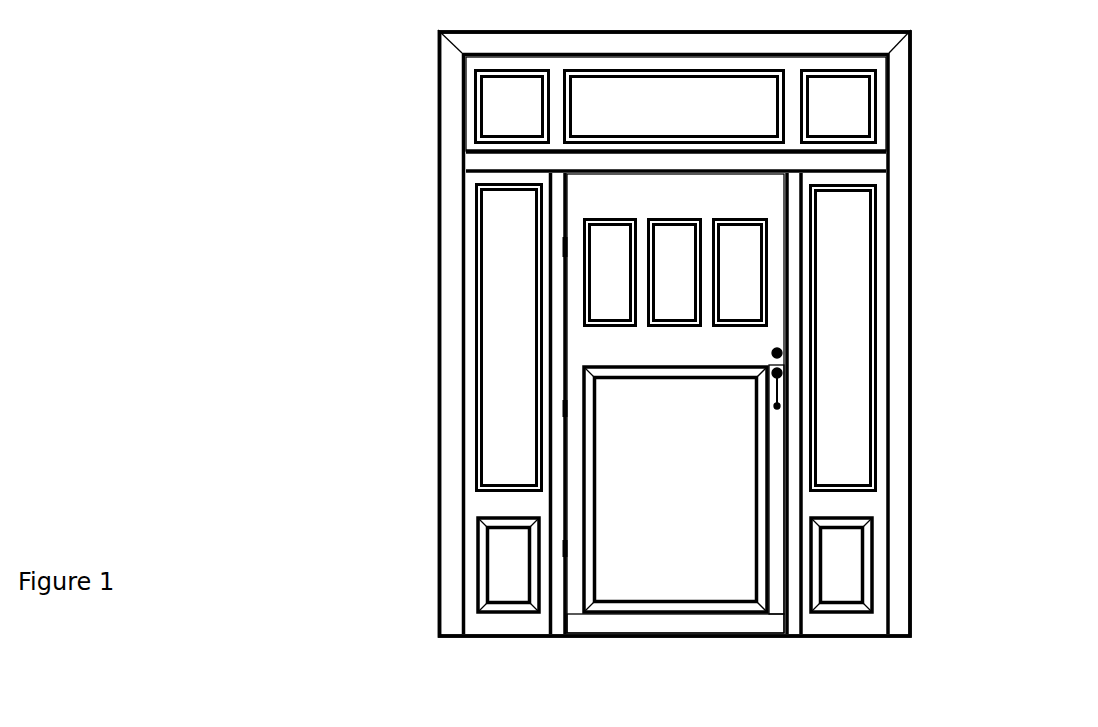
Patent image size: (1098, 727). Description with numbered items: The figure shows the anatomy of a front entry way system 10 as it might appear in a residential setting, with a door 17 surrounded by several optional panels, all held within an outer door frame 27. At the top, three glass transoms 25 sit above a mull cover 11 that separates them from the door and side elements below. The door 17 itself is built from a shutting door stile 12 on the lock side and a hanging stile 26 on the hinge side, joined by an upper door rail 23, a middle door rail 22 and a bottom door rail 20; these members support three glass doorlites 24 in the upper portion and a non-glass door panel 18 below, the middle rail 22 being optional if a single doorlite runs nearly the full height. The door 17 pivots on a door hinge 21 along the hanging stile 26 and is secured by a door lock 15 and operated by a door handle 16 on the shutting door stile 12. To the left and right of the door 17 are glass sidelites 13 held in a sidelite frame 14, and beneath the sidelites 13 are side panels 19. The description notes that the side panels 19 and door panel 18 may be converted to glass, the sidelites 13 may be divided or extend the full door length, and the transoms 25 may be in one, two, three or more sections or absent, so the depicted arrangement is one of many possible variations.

The entry way system 10 is at (766, 334).
The mull cover 11 is at (773, 159).
The shutting door stile 12 is at (772, 209).
The sidelites 13 is at (525, 369).
The sidelite frame 14 is at (869, 273).
The door lock 15 is at (781, 351).
The door handle 16 is at (783, 374).
The door 17 is at (773, 438).
The door panel 18 is at (712, 534).
The side panels 19 is at (516, 583).
The bottom door rail 20 is at (615, 627).
The door hinge 21 is at (563, 405).
The middle door rail 22 is at (596, 342).
The upper door rail 23 is at (640, 186).
The doorlites 24 is at (732, 239).
The transoms 25 is at (820, 131).
The hanging stile 26 is at (573, 505).
The door frame 27 is at (903, 459).